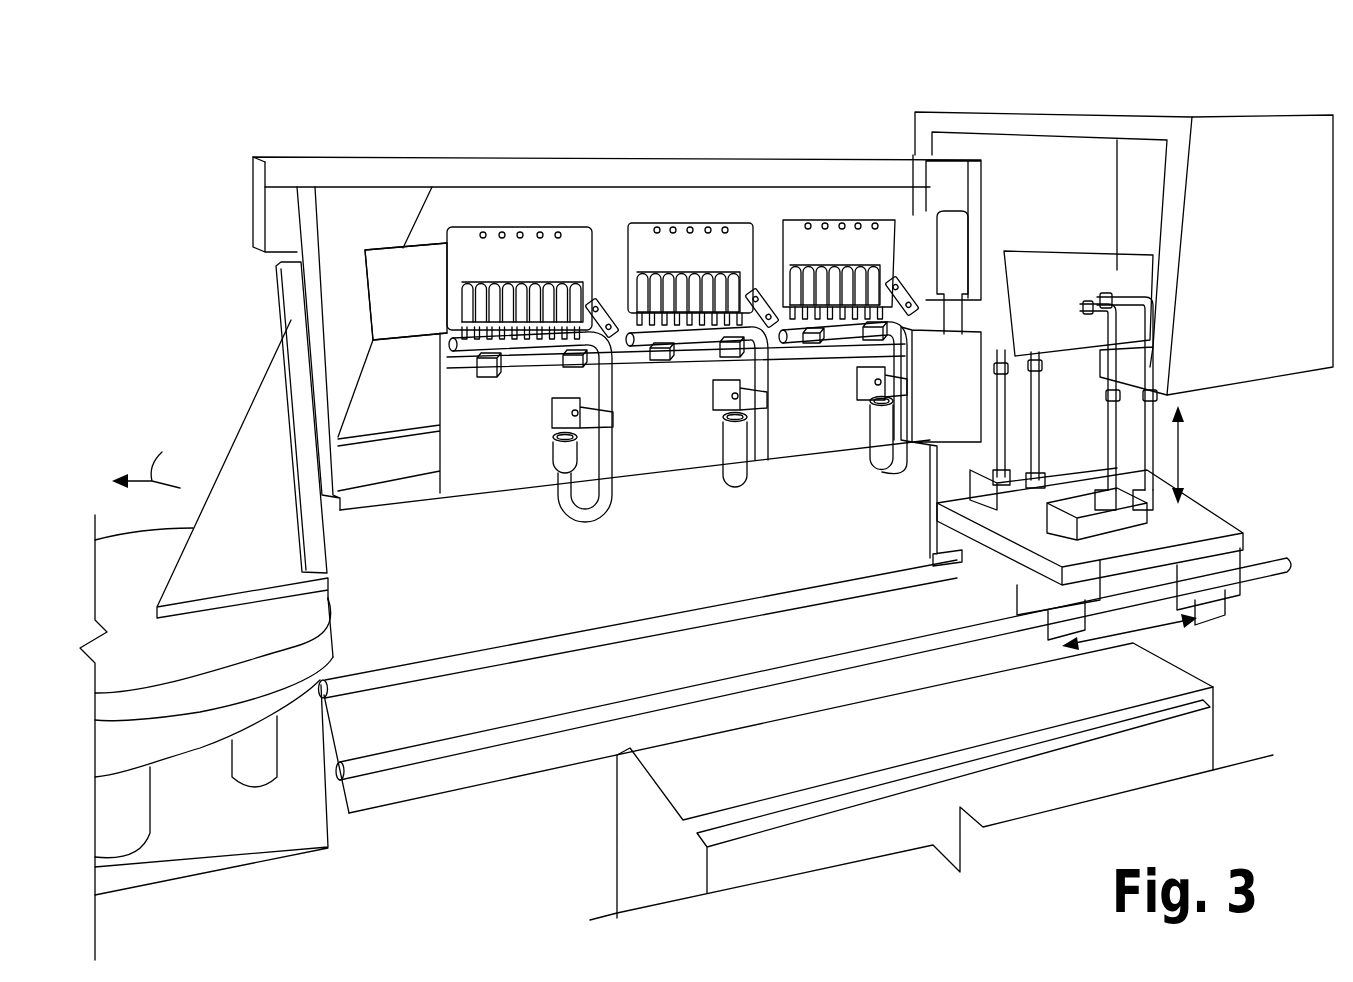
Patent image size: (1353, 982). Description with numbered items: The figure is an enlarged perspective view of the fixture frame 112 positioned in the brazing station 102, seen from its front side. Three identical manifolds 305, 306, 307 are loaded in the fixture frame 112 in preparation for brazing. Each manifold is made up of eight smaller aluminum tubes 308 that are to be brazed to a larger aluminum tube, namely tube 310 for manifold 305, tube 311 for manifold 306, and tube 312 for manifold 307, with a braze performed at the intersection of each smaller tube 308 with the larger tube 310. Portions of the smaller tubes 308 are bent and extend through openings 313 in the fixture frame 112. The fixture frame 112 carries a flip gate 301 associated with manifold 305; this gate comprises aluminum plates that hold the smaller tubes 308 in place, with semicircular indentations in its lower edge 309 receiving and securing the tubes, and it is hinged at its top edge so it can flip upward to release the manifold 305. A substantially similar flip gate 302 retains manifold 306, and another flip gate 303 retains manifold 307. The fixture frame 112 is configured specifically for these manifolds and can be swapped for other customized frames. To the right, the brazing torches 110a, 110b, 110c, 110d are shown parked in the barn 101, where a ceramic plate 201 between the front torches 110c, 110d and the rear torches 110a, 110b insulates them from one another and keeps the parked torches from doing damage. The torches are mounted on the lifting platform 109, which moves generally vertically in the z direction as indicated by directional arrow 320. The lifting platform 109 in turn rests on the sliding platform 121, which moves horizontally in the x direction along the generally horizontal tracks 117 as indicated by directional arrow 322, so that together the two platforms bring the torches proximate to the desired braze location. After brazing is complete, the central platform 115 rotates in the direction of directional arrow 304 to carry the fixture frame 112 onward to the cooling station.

The brazing station 102 is at (397, 76).
The fixture frame 112 is at (660, 170).
The ceramic plate 201 is at (1127, 265).
The barn 101 is at (1291, 263).
The brazing torch 110a is at (1003, 392).
The brazing torch 110b is at (1037, 401).
The brazing torch 110c is at (1110, 298).
The brazing torch 110d is at (1090, 306).
The directional arrow 320 is at (1185, 473).
The lifting platform 109 is at (1127, 517).
The directional arrow 322 is at (1160, 628).
The sliding platform 121 is at (1225, 575).
The tracks 117 is at (440, 737).
The directional arrow 304 is at (220, 469).
The central platform 115 is at (173, 657).
The openings 313 is at (433, 297).
The flip gate 301 is at (572, 248).
The flip gate 302 is at (693, 247).
The flip gate 303 is at (827, 247).
The smaller aluminum tubes 308 is at (465, 287).
The lower edge 309 is at (460, 340).
The larger aluminum tube 310 is at (550, 343).
The larger aluminum tube 311 is at (697, 333).
The larger aluminum tube 312 is at (843, 333).
The manifold 305 is at (577, 497).
The manifold 306 is at (737, 480).
The manifold 307 is at (880, 473).